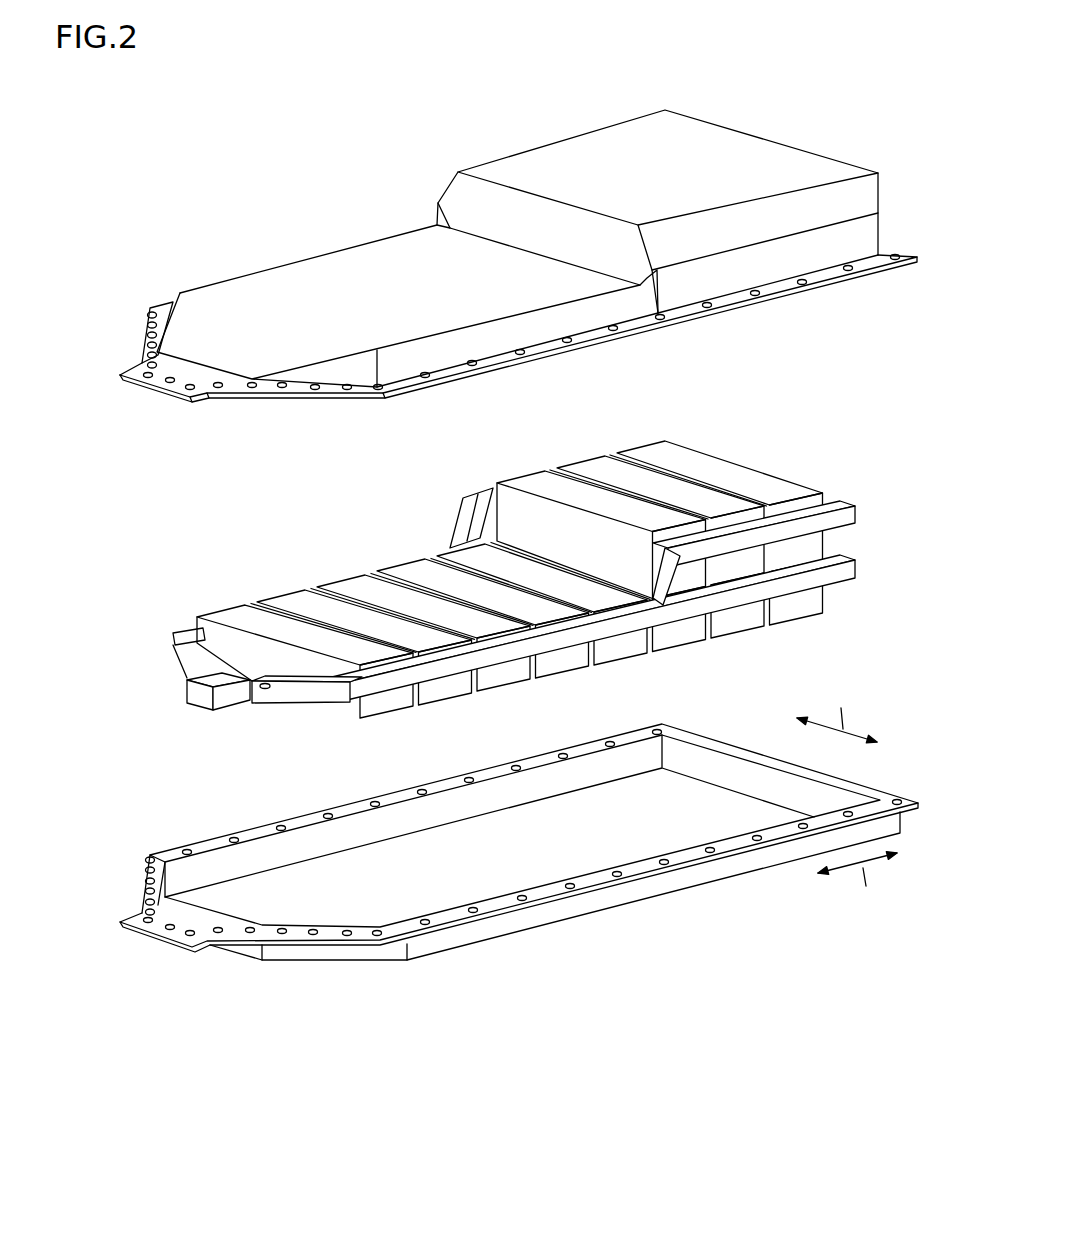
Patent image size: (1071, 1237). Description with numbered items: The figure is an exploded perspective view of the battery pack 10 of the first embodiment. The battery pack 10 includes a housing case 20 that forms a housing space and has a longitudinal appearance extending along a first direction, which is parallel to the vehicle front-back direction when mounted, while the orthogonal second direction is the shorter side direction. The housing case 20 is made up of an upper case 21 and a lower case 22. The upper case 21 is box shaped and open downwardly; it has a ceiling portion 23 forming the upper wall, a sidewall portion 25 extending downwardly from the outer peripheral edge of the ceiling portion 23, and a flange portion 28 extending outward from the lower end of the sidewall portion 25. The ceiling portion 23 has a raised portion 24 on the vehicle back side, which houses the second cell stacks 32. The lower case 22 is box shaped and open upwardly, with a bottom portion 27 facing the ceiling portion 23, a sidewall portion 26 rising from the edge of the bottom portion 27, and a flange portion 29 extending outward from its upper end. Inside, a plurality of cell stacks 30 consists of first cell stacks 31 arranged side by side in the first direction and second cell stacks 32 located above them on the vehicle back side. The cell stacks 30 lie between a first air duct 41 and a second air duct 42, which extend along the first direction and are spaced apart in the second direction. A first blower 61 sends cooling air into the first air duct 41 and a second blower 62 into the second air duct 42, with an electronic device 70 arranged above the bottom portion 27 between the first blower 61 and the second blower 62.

The battery pack 10 is at (856, 118).
The housing case 20 is at (97, 524).
The upper case 21 is at (136, 447).
The lower case 22 is at (129, 862).
The ceiling portion 23 is at (330, 282).
The raised portion 24 is at (578, 162).
The sidewall portion 25 is at (570, 313).
The sidewall portion 26 is at (605, 893).
The bottom portion 27 is at (447, 870).
The flange portion 28 is at (775, 287).
The flange portion 29 is at (728, 840).
The cell stacks 30 is at (513, 577).
The first cell stacks 31 is at (390, 707).
The second cell stacks 32 is at (725, 503).
The first air duct 41 is at (636, 626).
The second air duct 42 is at (432, 527).
The first blower 61 is at (260, 683).
The second blower 62 is at (215, 668).
The electronic device 70 is at (219, 703).